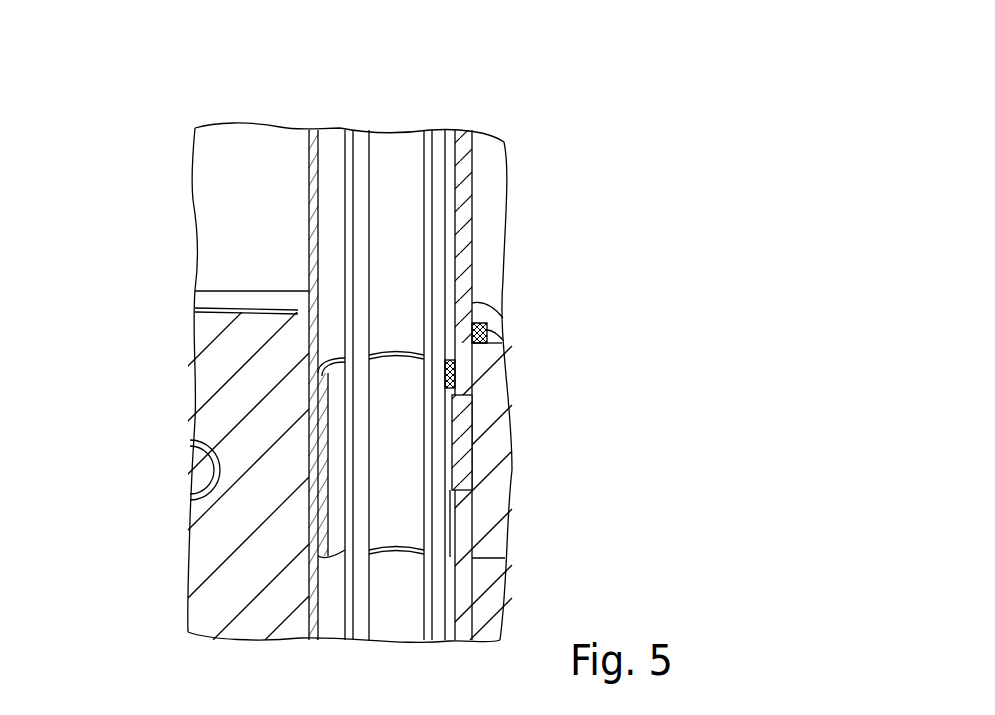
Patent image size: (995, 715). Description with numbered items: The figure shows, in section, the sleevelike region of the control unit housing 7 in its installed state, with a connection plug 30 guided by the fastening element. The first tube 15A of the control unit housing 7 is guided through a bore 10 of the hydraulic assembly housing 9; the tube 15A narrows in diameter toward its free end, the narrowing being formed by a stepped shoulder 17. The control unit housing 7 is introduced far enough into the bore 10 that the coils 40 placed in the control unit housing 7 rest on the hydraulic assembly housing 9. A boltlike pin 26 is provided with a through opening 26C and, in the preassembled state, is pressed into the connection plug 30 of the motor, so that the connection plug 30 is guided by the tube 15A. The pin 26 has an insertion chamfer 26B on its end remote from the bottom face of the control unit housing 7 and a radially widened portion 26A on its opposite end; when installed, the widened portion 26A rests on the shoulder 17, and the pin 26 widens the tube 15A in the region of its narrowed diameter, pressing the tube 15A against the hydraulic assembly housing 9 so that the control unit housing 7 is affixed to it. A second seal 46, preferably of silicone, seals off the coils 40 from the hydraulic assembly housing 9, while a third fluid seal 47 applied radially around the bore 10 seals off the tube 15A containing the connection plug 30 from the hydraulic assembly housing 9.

The control unit housing 7 is at (321, 120).
The hydraulic assembly housing 9 is at (512, 475).
The bore 10 is at (473, 597).
The first tube 15A is at (478, 173).
The stepped shoulder 17 is at (462, 420).
The boltlike pin 26 is at (182, 458).
The radially widened portion 26A is at (316, 377).
The insertion chamfer 26B is at (453, 551).
The through opening 26C is at (327, 442).
The connection plug 30 is at (360, 143).
The coils 40 is at (226, 170).
The second seal 46 is at (497, 320).
The third fluid seal 47 is at (453, 393).